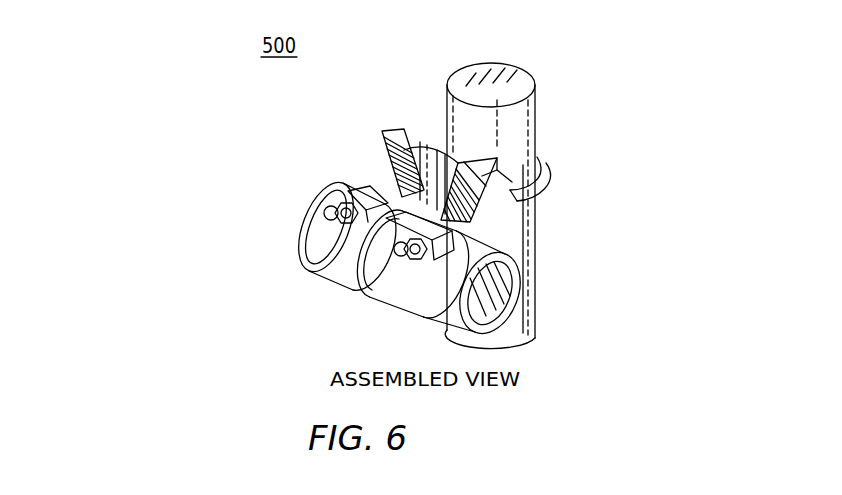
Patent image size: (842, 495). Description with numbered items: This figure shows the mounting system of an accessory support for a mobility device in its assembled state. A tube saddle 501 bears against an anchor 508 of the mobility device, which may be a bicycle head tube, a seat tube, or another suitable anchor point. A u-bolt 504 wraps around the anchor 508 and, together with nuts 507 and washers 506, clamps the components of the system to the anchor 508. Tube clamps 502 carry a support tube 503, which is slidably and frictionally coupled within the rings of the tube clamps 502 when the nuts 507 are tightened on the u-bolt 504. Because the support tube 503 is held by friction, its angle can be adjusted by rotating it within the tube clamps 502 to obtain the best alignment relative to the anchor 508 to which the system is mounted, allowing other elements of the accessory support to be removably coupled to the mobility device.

The tube saddle 501 is at (370, 136).
The tube clamps 502 is at (330, 280).
The support tube 503 is at (380, 298).
The u-bolt 504 is at (555, 158).
The washers 506 is at (314, 211).
The nuts 507 is at (410, 249).
The anchor 508 is at (432, 88).